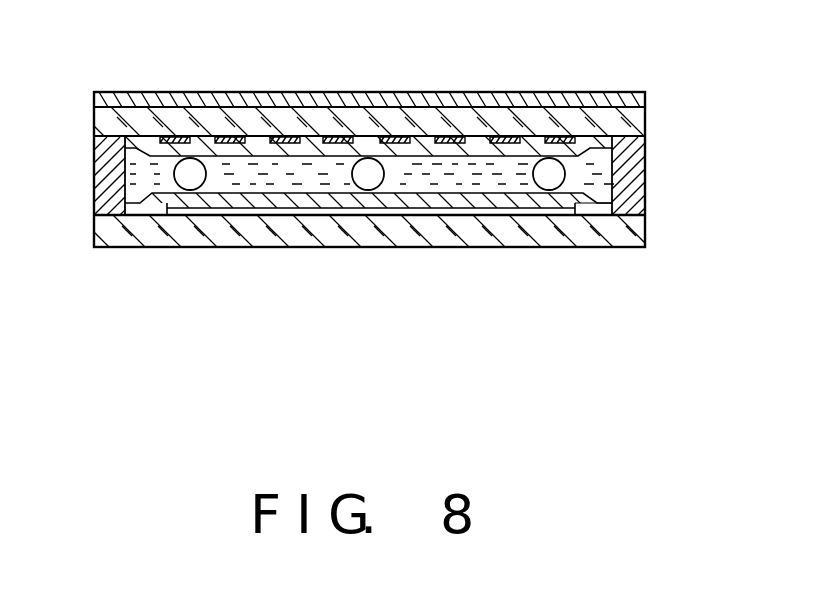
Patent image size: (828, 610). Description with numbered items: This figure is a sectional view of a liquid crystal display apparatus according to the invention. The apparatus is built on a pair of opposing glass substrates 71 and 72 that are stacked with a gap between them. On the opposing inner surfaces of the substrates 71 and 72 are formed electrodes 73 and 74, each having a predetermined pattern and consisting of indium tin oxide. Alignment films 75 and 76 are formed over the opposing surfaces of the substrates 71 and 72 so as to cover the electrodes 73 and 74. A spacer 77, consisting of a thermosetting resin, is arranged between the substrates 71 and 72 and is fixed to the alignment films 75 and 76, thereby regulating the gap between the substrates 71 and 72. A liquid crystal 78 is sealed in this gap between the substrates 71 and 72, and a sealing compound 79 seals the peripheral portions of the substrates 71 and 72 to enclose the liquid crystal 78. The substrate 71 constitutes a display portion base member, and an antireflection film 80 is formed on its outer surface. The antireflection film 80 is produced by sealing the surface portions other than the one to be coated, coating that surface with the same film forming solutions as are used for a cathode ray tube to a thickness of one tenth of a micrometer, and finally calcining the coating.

The glass substrate 71 is at (143, 118).
The glass substrate 72 is at (122, 232).
The electrode 73 is at (295, 135).
The electrode 74 is at (262, 212).
The alignment film 75 is at (468, 145).
The alignment film 76 is at (480, 203).
The spacer 77 is at (123, 181).
The liquid crystal 78 is at (588, 198).
The sealing compound 79 is at (637, 195).
The antireflection film 80 is at (595, 93).